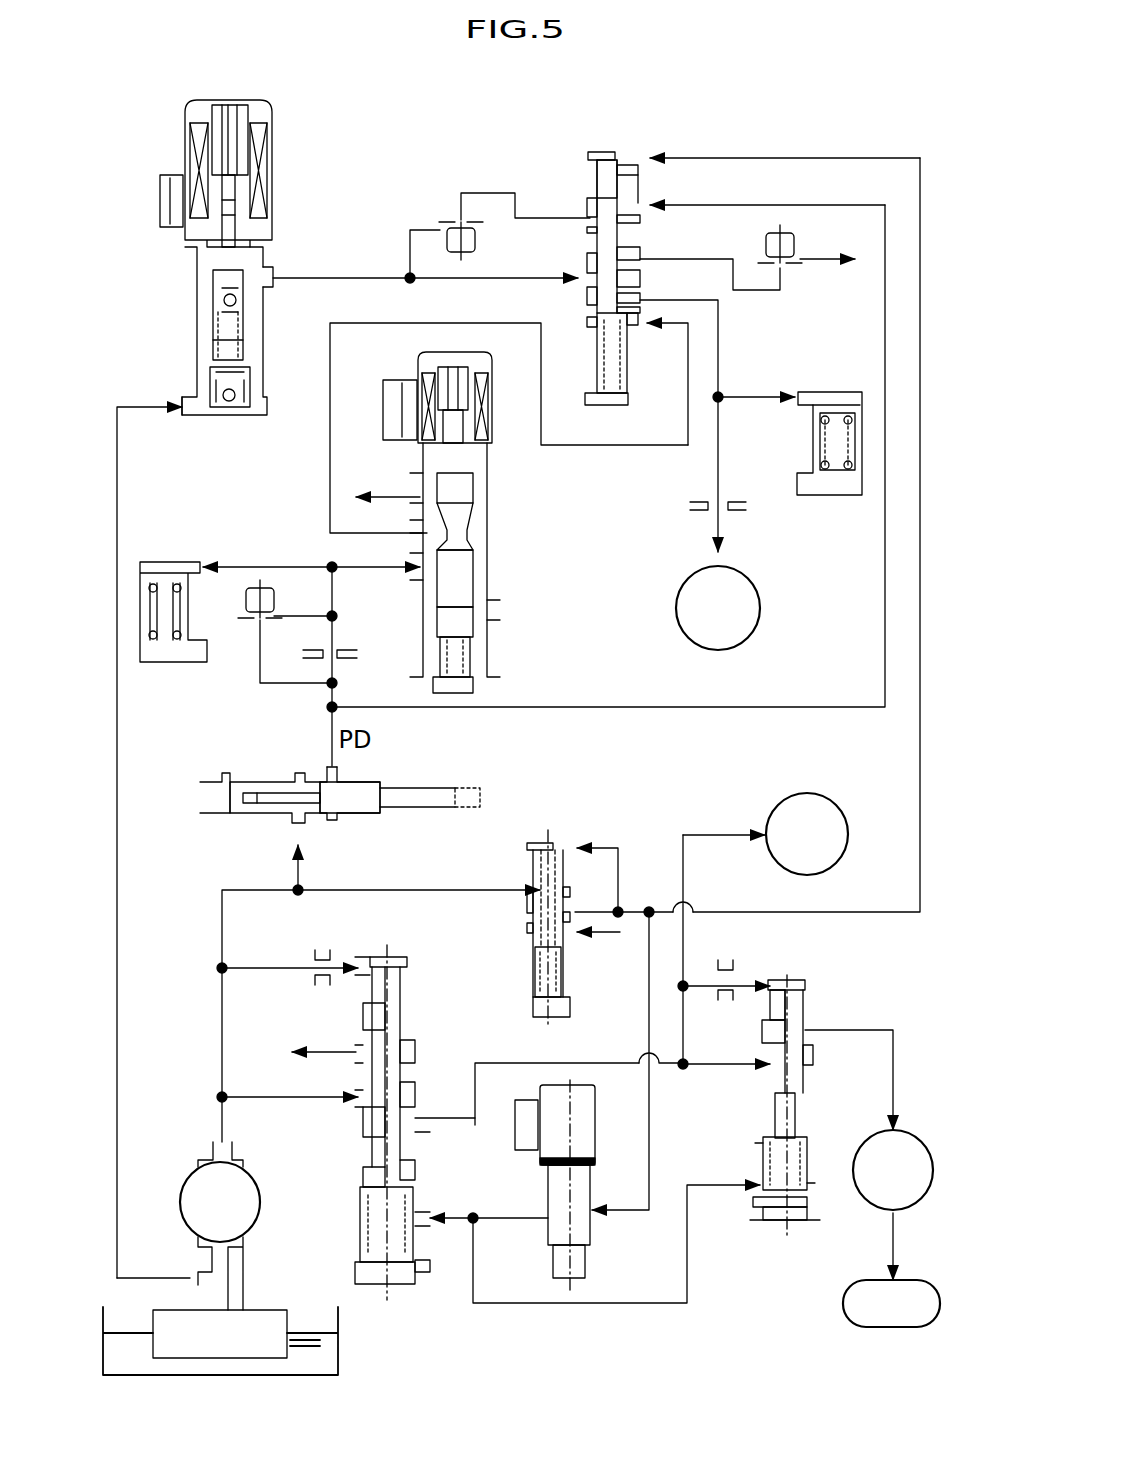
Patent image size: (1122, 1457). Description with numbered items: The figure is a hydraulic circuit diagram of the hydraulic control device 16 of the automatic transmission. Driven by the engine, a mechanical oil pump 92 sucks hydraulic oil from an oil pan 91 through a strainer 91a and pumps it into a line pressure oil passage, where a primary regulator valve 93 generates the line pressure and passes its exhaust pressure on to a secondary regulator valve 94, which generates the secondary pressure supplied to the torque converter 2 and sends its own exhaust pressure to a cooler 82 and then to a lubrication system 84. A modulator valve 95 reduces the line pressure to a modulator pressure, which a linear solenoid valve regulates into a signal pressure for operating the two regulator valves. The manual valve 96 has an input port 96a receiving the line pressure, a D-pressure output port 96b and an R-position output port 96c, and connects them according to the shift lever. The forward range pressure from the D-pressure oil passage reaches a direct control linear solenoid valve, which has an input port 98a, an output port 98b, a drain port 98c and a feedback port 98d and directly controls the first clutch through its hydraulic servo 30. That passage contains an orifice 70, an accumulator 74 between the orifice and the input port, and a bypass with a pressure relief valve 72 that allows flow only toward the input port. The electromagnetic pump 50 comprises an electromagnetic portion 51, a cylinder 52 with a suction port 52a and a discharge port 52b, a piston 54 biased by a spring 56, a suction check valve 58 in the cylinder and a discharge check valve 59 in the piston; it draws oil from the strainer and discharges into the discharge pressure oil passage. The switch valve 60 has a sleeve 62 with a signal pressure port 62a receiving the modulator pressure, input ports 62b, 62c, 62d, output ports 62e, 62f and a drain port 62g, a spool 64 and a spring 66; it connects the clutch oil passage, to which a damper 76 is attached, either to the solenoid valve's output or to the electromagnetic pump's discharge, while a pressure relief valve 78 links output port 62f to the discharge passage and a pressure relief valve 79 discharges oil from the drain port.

The torque converter 2 is at (835, 800).
The hydraulic control device 16 is at (900, 128).
The hydraulic servo 30 is at (677, 608).
The electromagnetic pump 50 is at (280, 96).
The electromagnetic portion 51 is at (272, 178).
The cylinder 52 is at (195, 262).
The suction port 52a is at (187, 398).
The discharge port 52b is at (265, 272).
The piston 54 is at (213, 308).
The spring 56 is at (212, 347).
The suction check valve 58 is at (255, 391).
The discharge check valve 59 is at (242, 314).
The switch valve 60 is at (568, 128).
The sleeve 62 is at (598, 150).
The signal pressure port 62a is at (630, 150).
The input port 62b is at (638, 330).
The input port 62c is at (587, 270).
The input port 62d is at (640, 188).
The output port 62e is at (642, 293).
The output port 62f is at (587, 210).
The drain port 62g is at (642, 250).
The spool 64 is at (597, 175).
The spring 66 is at (598, 345).
The orifice 70 is at (347, 648).
The pressure relief valve 72 is at (235, 648).
The accumulator 74 is at (163, 663).
The damper 76 is at (832, 495).
The pressure relief valve 78 is at (442, 205).
The pressure relief valve 79 is at (792, 283).
The cooler 82 is at (915, 1140).
The lubrication system 84 is at (925, 1280).
The oil pan 91 is at (338, 1360).
The strainer 91a is at (264, 1308).
The mechanical oil pump 92 is at (192, 1175).
The primary regulator valve 93 is at (416, 978).
The secondary regulator valve 94 is at (745, 1222).
The modulator valve 95 is at (512, 957).
The manual valve 96 is at (190, 797).
The input port 96a is at (295, 818).
The D-pressure output port 96b is at (345, 772).
The R-position output port 96c is at (222, 818).
The input port 98a is at (420, 558).
The output port 98b is at (428, 520).
The drain port 98c is at (435, 470).
The feedback port 98d is at (485, 612).